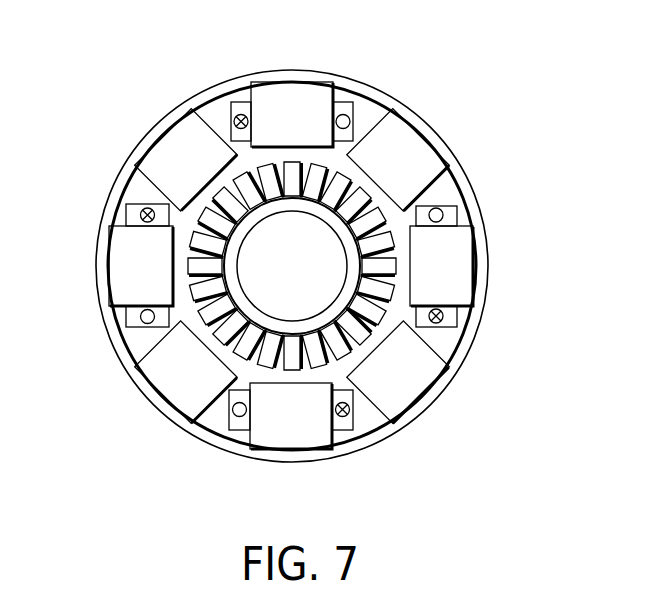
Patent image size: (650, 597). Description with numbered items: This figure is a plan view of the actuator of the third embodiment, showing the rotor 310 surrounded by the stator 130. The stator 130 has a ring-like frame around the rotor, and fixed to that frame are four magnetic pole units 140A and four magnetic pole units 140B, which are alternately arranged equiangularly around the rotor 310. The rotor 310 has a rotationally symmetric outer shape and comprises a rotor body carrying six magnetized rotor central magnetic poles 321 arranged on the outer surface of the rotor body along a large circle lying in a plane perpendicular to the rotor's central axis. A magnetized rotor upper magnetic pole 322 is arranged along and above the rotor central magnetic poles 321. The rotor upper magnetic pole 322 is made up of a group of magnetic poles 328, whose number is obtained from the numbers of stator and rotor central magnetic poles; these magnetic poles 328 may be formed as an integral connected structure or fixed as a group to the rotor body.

The stator 130 is at (207, 82).
The magnetic pole units 140A is at (290, 95).
The magnetic pole units 140B is at (173, 152).
The rotor 310 is at (362, 198).
The rotor central magnetic poles 321 is at (385, 318).
The rotor upper magnetic pole 322 is at (389, 207).
The magnetic poles 328 is at (395, 230).